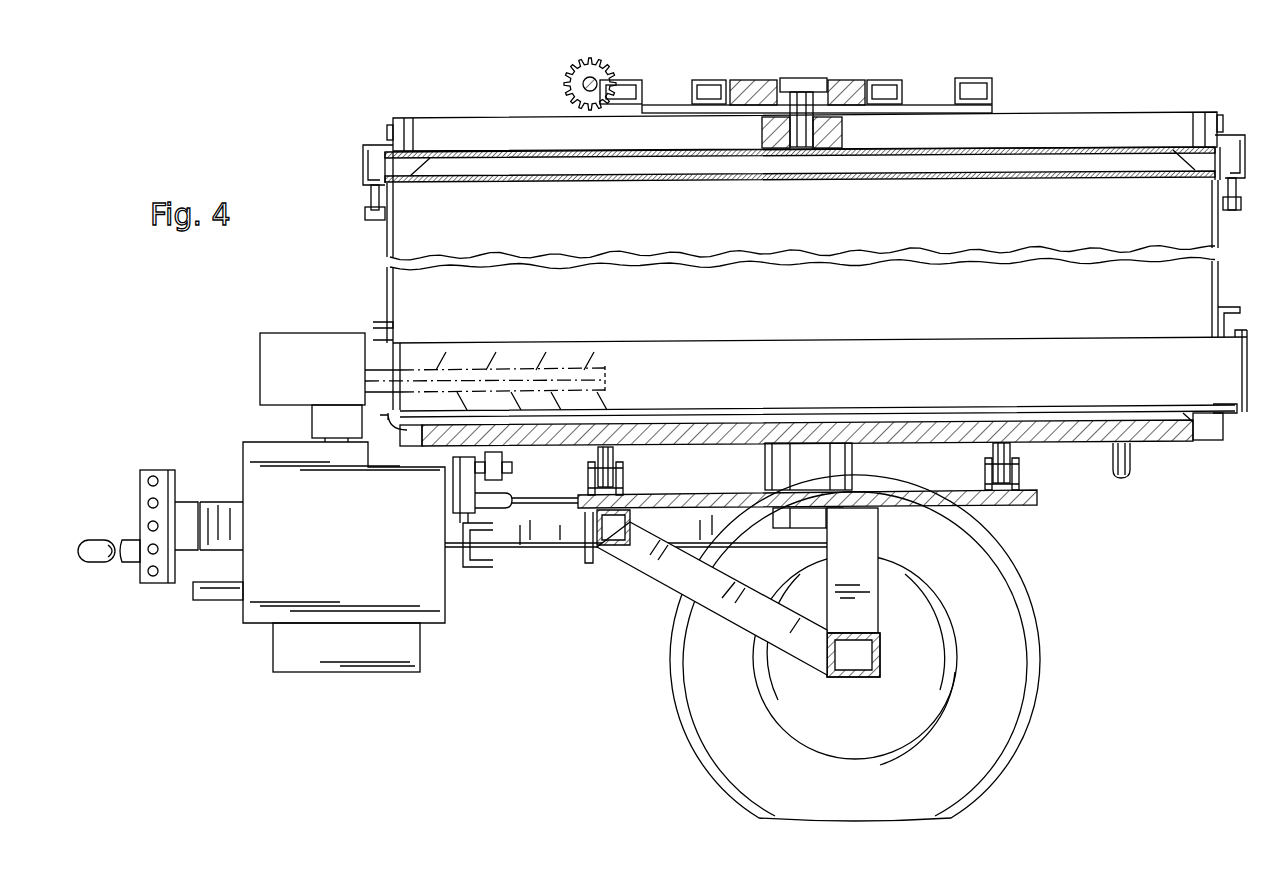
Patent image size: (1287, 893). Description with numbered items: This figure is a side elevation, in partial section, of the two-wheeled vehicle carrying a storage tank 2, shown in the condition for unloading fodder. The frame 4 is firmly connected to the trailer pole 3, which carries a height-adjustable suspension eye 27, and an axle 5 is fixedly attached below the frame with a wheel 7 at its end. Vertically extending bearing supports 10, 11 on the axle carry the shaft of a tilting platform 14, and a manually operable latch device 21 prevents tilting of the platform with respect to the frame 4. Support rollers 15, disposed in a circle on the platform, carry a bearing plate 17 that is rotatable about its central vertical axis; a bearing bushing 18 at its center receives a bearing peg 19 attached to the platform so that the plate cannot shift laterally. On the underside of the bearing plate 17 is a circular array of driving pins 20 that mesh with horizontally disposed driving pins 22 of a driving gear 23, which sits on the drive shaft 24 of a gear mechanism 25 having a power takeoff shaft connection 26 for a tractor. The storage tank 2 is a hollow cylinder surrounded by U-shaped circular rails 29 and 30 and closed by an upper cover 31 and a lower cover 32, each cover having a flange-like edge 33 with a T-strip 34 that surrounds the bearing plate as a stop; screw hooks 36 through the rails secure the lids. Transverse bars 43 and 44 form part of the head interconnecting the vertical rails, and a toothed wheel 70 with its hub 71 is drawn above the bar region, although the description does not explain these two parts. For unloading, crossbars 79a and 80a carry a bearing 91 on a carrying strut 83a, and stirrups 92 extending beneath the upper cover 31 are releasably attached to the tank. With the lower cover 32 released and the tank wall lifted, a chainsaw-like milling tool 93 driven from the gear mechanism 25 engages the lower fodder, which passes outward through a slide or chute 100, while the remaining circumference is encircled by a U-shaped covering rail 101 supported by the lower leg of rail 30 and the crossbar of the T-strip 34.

The storage tank 2 is at (1226, 283).
The trailer pole 3 is at (187, 552).
The frame 4 is at (505, 540).
The axle 5 is at (866, 658).
The wheel 7 is at (693, 668).
The bearing support 10 is at (842, 600).
The bearing support 11 is at (852, 591).
The tilting platform 14 is at (1010, 507).
The support roller 15 is at (614, 452).
The bearing plate 17 is at (1140, 435).
The bearing bushing 18 is at (828, 450).
The bearing peg 19 is at (778, 506).
The driving pin 20 is at (1118, 458).
The latch device 21 is at (600, 574).
The driving pin 22 is at (512, 468).
The driving gear 23 is at (475, 500).
The drive shaft 24 is at (453, 490).
The gear mechanism 25 is at (425, 610).
The power takeoff shaft connection 26 is at (222, 592).
The suspension eye 27 is at (97, 550).
The U-shaped circular rail 29 is at (1212, 211).
The U-shaped circular rail 30 is at (1222, 309).
The upper cover 31 is at (1095, 160).
The lower cover 32 is at (1062, 418).
The flange-like edge 33 is at (1220, 405).
The T-strip 34 is at (1225, 425).
The screw hook 36 is at (1238, 212).
The transverse bar 43 is at (624, 96).
The transverse bar 44 is at (980, 92).
The sprocket 70 is at (565, 86).
The sprocket hub 71 is at (584, 90).
The crossbar 79a is at (708, 97).
The crossbar 80a is at (893, 96).
The carrying strut 83a is at (757, 97).
The bearing 91 is at (804, 128).
The stirrup 92 is at (362, 160).
The milling tool 93 is at (620, 379).
The slide or chute 100 is at (372, 655).
The U-shaped covering rail 101 is at (1245, 359).